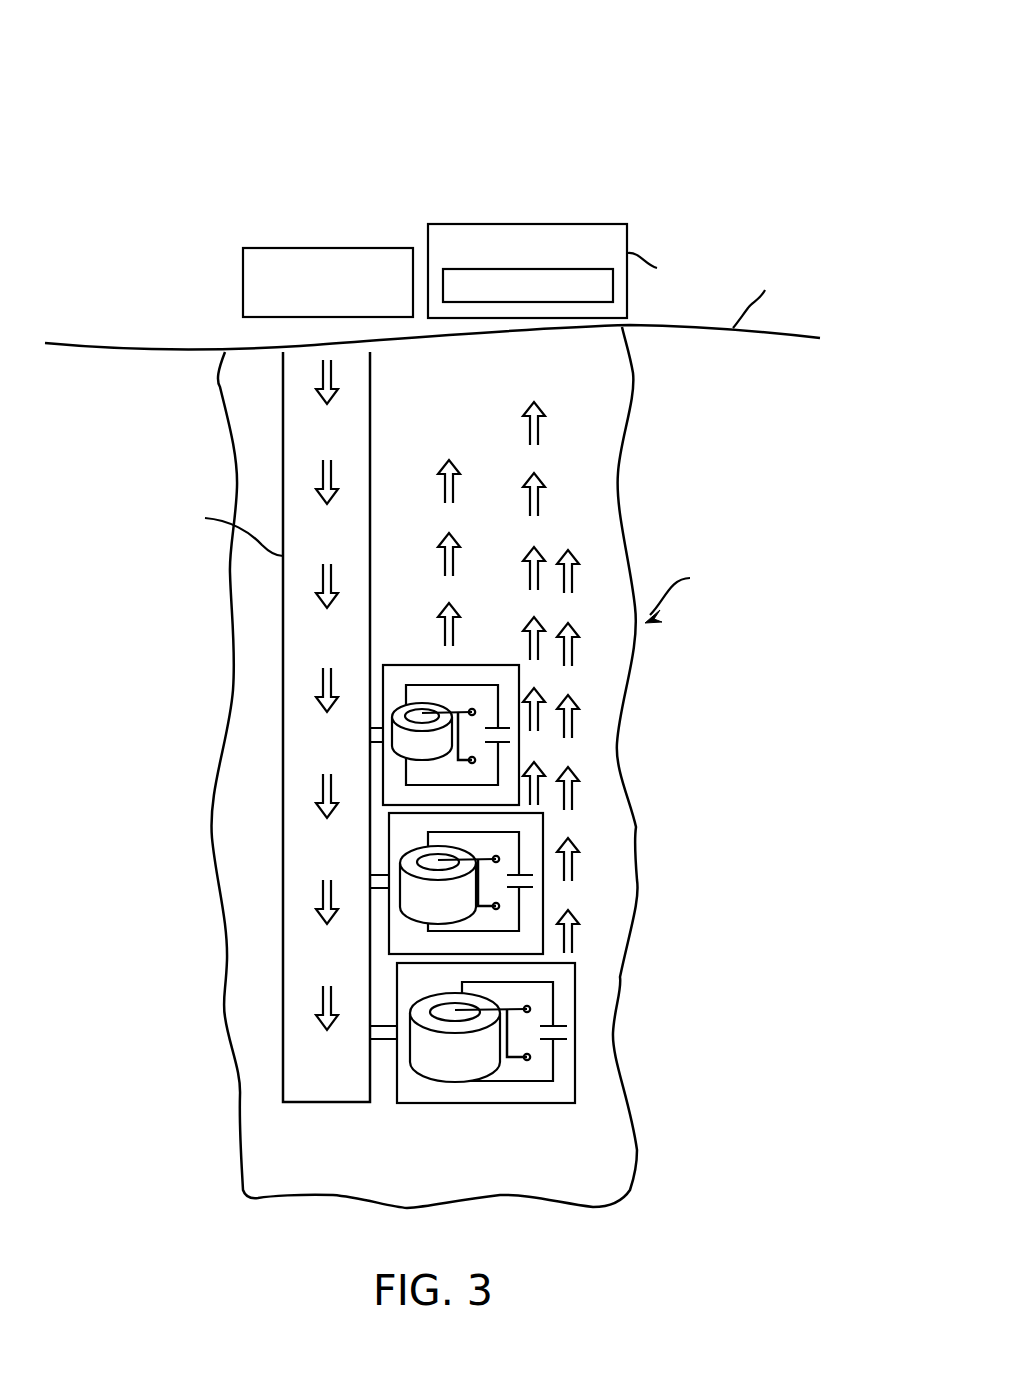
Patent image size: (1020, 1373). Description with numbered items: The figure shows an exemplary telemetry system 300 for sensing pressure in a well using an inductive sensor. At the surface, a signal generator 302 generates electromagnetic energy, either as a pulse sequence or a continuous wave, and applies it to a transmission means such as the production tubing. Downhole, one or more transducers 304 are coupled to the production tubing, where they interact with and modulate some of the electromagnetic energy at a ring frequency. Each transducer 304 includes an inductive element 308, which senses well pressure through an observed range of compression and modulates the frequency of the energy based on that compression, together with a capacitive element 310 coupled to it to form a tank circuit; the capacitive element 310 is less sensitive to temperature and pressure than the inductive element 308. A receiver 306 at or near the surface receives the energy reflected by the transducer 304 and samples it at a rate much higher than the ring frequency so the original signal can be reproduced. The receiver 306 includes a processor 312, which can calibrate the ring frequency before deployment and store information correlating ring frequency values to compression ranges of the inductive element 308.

The system 300 is at (260, 90).
The signal generator 302 is at (330, 248).
The downhole transducer 304 is at (520, 750).
The receiver 306 is at (563, 224).
The inductive element 308 is at (423, 1085).
The capacitive element 310 is at (543, 1052).
The processor 312 is at (666, 268).